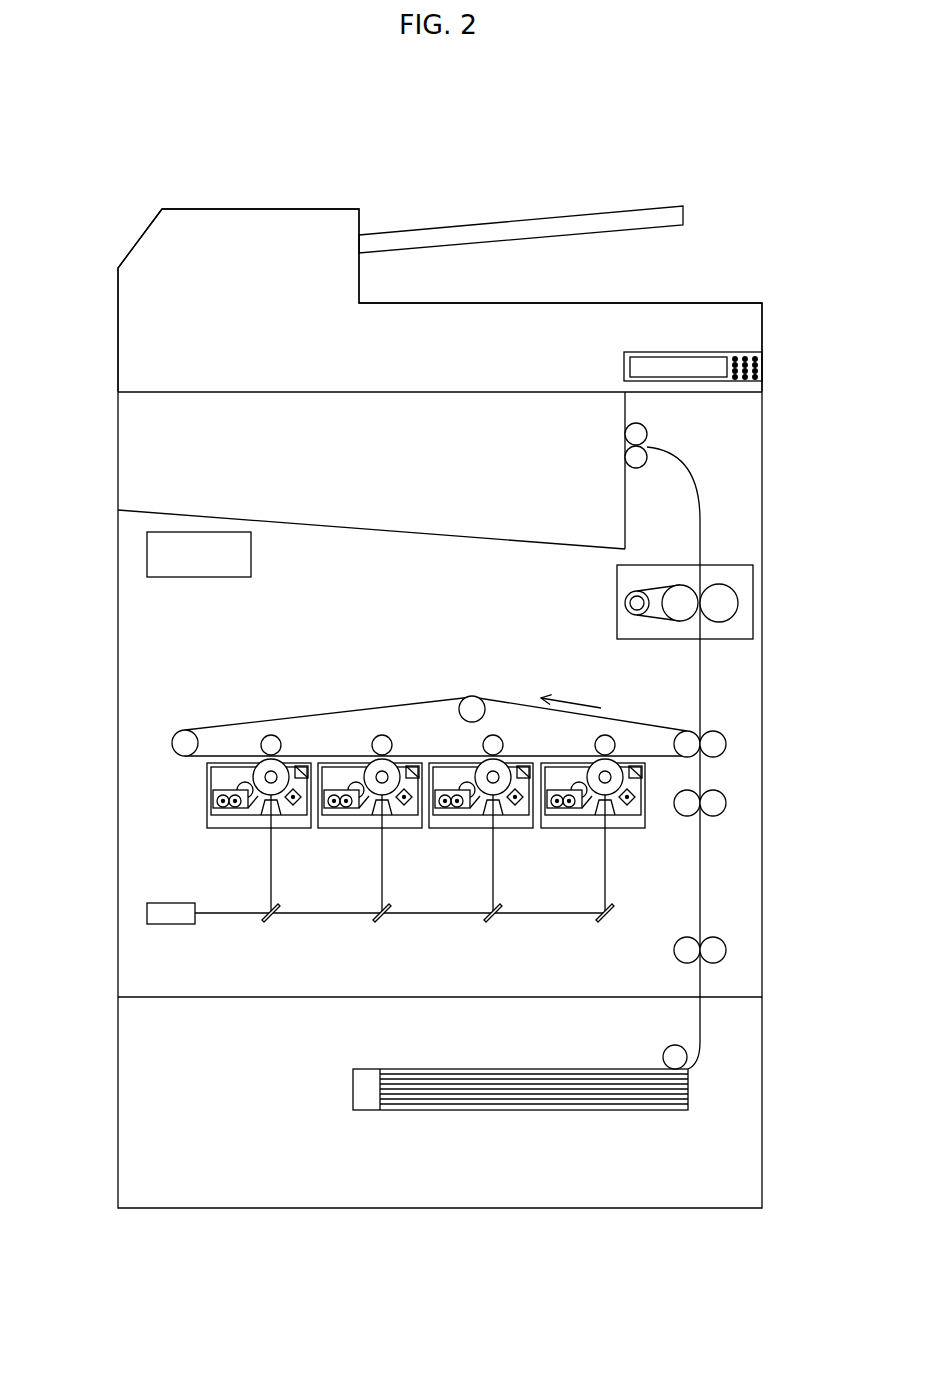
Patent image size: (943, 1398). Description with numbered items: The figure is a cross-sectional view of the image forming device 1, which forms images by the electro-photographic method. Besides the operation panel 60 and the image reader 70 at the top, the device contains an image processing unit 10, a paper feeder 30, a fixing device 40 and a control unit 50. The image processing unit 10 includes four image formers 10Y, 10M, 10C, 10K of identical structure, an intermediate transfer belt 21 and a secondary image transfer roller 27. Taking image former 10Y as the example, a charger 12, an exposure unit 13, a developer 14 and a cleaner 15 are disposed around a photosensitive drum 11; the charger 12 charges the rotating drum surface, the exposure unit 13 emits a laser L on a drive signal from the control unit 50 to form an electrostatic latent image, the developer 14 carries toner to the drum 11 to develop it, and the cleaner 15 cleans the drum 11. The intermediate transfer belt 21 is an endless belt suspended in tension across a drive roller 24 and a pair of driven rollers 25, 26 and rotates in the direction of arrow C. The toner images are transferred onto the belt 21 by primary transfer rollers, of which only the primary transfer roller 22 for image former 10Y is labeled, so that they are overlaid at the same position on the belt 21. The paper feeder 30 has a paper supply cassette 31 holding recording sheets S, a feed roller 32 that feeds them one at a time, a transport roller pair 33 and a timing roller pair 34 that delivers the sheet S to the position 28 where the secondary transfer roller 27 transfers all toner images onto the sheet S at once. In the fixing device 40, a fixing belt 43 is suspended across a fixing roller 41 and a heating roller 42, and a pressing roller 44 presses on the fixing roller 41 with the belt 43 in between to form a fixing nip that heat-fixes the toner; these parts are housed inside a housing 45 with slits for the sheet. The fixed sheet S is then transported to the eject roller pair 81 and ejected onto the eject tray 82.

The image forming device 1 is at (447, 156).
The image reader 70 is at (140, 345).
The operation panel 60 is at (708, 377).
The eject tray 82 is at (414, 516).
The eject roller pair 81 is at (648, 442).
The control unit 50 is at (147, 553).
The fixing device 40 is at (603, 613).
The fixing roller 41 is at (680, 590).
The heating roller 42 is at (631, 597).
The fixing belt 43 is at (658, 584).
The pressing roller 44 is at (719, 590).
The housing 45 is at (632, 640).
The intermediate transfer belt 21 is at (328, 714).
The primary transfer roller 22 is at (270, 740).
The drive roller 24 is at (686, 733).
The driven roller 25 is at (185, 740).
The driven roller 26 is at (473, 697).
The secondary image transfer roller 27 is at (714, 750).
The position where secondary transfer takes place 28 is at (710, 731).
The rotation direction arrow C is at (571, 690).
The image processing unit 10 is at (148, 808).
The image former 10Y is at (255, 842).
The image former 10M is at (366, 842).
The image former 10C is at (477, 842).
The image former 10K is at (589, 842).
The photosensitive drum 11 is at (259, 771).
The charger 12 is at (293, 813).
The exposure unit 13 is at (316, 928).
The developer 14 is at (210, 808).
The cleaner 15 is at (293, 769).
The laser L is at (280, 854).
The timing roller pair 34 is at (714, 809).
The transport roller pair 33 is at (713, 937).
The paper feeder 30 is at (146, 1085).
The paper supply cassette 31 is at (366, 1068).
The feed roller 32 is at (666, 1048).
The recording sheet S is at (413, 1077).